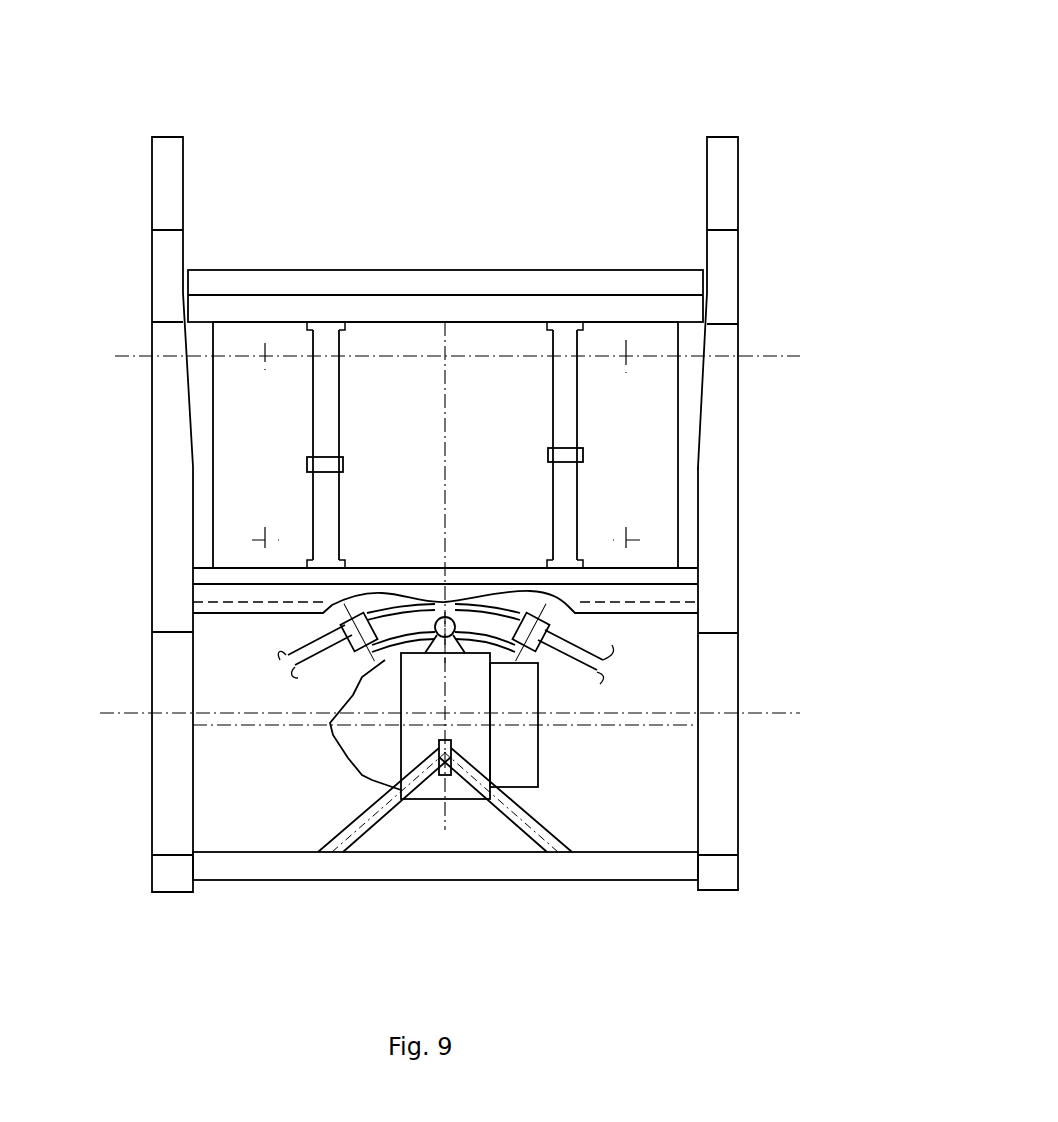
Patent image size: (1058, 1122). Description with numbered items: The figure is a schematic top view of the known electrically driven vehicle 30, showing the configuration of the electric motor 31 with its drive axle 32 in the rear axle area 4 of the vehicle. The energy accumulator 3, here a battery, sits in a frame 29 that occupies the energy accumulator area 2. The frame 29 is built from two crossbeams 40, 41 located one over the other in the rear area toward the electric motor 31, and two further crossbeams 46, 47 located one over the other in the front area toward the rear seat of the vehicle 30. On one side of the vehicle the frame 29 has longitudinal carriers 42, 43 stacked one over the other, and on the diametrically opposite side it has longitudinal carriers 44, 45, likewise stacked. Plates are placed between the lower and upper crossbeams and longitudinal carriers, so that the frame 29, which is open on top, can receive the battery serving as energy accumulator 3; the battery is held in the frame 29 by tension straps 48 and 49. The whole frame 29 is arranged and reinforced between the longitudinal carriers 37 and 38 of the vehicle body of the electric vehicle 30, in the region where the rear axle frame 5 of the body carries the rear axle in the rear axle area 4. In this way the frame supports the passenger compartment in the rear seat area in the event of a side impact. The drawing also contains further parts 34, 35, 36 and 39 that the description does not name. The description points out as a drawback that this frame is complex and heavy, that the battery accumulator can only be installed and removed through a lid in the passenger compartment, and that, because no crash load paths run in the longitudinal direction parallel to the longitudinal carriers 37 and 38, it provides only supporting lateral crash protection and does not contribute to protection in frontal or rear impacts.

The electrically driven vehicle 30 is at (732, 105).
The crossbeam 47 is at (252, 290).
The crossbeam 46 is at (654, 305).
The frame 29 is at (415, 312).
The longitudinal carrier 42 is at (781, 513).
The longitudinal carrier 43 is at (732, 350).
The longitudinal carrier 44 is at (126, 514).
The longitudinal carrier 45 is at (205, 378).
The tension strap 48 is at (325, 380).
The tension strap 49 is at (568, 425).
The energy accumulator 3 is at (494, 442).
The energy accumulator area 2 is at (657, 398).
The pivot joint 36 is at (448, 618).
The crossbeam 40 is at (521, 582).
The crossbeam 41 is at (685, 597).
The rear axle frame 5 is at (175, 673).
The rear axle area 4 is at (740, 698).
The lever arm 39 is at (565, 655).
The drive axle 32 is at (278, 725).
The electric motor 31 is at (520, 757).
The strut 34 is at (357, 835).
The strut 35 is at (525, 840).
The longitudinal carrier 37 is at (175, 890).
The longitudinal carrier 38 is at (712, 890).